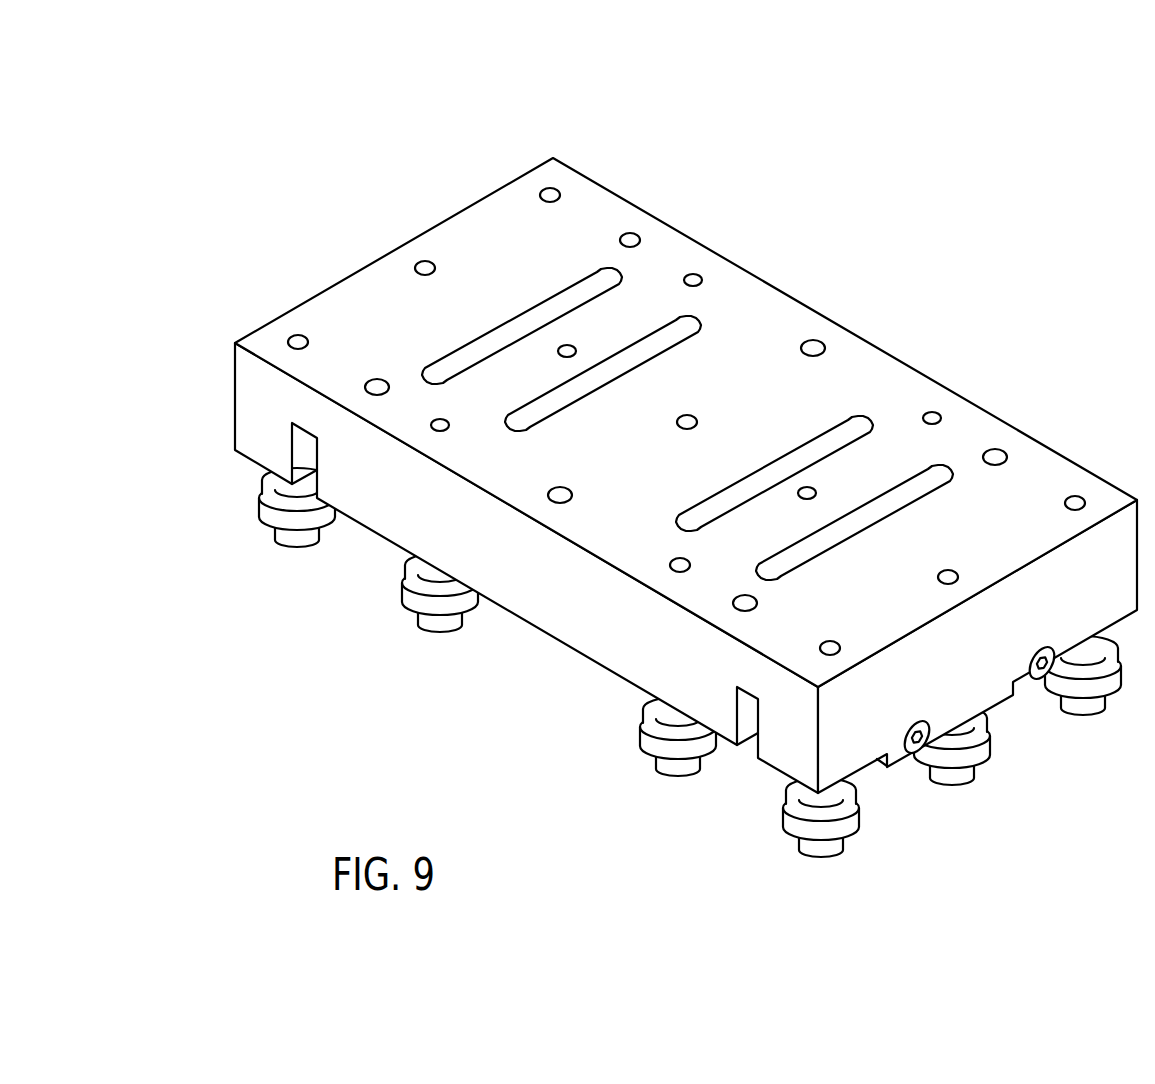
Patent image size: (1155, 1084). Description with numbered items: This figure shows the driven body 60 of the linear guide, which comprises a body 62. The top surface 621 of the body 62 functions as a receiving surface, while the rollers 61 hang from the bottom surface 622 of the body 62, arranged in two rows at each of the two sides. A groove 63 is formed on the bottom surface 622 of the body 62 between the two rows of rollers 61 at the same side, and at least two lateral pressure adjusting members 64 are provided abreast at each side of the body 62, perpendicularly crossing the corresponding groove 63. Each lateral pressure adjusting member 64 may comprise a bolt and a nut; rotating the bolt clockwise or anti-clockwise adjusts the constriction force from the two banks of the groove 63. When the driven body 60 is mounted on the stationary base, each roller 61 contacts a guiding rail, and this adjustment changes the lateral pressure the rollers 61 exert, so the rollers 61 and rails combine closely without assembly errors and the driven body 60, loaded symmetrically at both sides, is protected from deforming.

The driven body 60 is at (686, 506).
The rollers 61 is at (803, 866).
The body 62 is at (686, 475).
The top surface 621 is at (774, 306).
The bottom surface 622 is at (504, 618).
The groove 63 is at (308, 426).
The lateral pressure adjusting member 64 is at (910, 748).